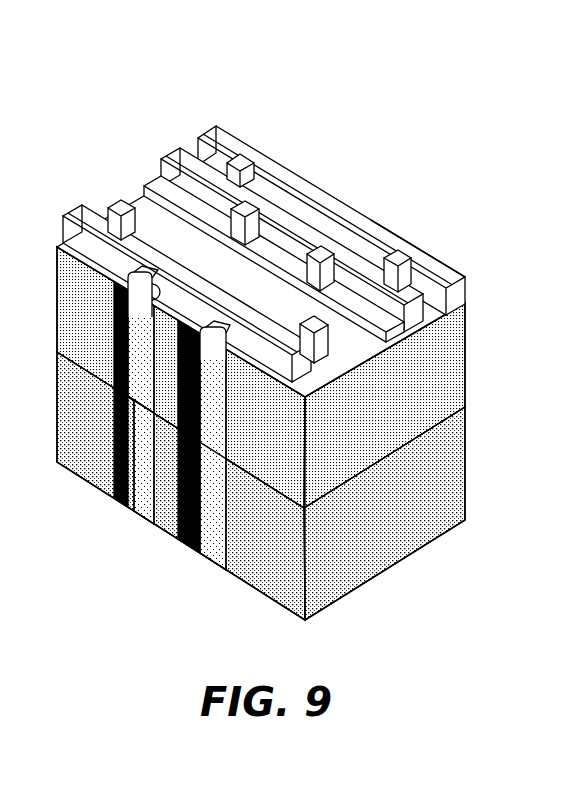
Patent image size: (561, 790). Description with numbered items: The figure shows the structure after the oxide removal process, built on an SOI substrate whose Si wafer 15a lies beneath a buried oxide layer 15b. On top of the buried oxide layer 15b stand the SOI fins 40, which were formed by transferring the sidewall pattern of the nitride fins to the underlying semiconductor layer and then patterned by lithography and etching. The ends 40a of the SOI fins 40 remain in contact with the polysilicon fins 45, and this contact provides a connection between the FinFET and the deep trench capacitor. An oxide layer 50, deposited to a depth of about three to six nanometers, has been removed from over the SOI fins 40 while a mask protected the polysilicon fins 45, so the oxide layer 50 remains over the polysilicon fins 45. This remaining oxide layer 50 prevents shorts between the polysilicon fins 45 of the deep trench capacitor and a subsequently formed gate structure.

The Si wafer 15a is at (462, 473).
The buried oxide layer 15b is at (462, 382).
The SOI fins 40 is at (347, 207).
The ends of the SOI fins 40a is at (390, 236).
The polysilicon fins 45 is at (238, 156).
The oxide layer 50 is at (417, 265).